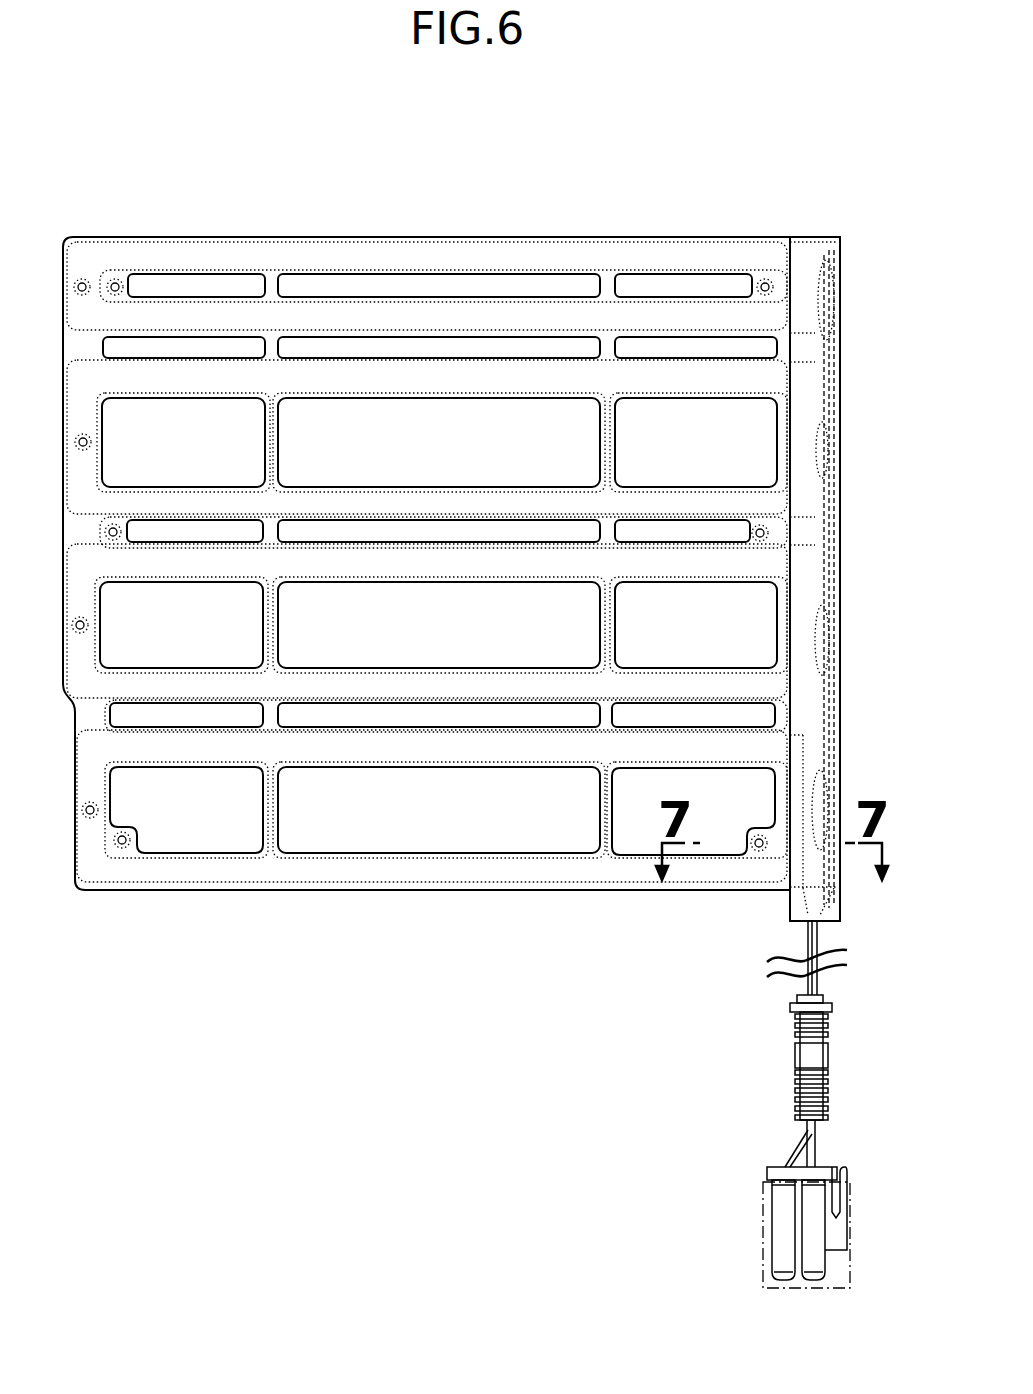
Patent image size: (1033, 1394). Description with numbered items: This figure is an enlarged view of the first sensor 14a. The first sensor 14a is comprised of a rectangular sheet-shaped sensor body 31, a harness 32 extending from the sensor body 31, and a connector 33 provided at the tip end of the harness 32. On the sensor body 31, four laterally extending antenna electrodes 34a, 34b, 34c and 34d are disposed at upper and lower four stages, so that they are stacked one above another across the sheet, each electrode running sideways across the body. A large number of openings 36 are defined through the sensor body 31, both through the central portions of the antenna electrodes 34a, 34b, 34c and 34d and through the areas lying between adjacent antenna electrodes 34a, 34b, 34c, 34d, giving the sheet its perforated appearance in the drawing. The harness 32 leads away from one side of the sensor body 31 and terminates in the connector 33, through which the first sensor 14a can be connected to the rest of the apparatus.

The sensor body 31 is at (413, 236).
The openings 36 is at (203, 285).
The antenna electrode 34a is at (93, 865).
The antenna electrode 34b is at (235, 682).
The antenna electrode 34c is at (225, 383).
The antenna electrode 34d is at (90, 238).
The first sensor 14a is at (420, 928).
The harness 32 is at (781, 1067).
The connector 33 is at (759, 1227).